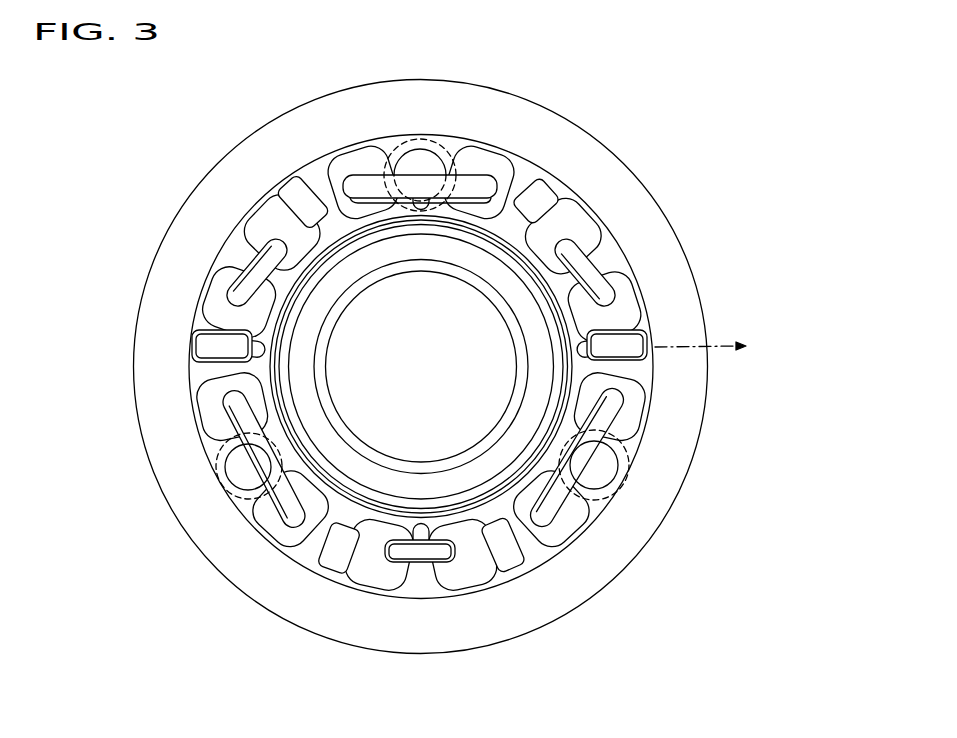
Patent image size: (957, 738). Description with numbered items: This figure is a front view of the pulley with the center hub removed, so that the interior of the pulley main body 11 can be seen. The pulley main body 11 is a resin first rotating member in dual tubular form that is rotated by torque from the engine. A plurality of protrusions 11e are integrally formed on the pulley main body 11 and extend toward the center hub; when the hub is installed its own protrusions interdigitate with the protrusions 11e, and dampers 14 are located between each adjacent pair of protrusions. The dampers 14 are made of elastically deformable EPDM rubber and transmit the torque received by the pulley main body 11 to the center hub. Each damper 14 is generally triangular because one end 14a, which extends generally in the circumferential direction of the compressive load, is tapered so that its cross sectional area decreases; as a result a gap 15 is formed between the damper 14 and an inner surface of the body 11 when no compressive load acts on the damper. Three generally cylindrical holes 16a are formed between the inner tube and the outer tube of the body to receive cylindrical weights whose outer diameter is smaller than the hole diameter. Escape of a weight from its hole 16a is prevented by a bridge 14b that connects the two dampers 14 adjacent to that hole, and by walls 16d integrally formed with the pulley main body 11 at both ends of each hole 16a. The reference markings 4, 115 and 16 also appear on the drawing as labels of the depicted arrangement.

The motor 4 is at (574, 76).
The pulley main body 11 is at (232, 195).
The protrusions 11e is at (366, 176).
The dampers 14 is at (331, 174).
The end of the damper 14a is at (575, 195).
The bridge 14b is at (380, 160).
The gap 15 is at (615, 385).
The coil 115 is at (634, 300).
The screw 16 is at (452, 141).
The holes 16a is at (217, 487).
The walls 16d is at (421, 140).